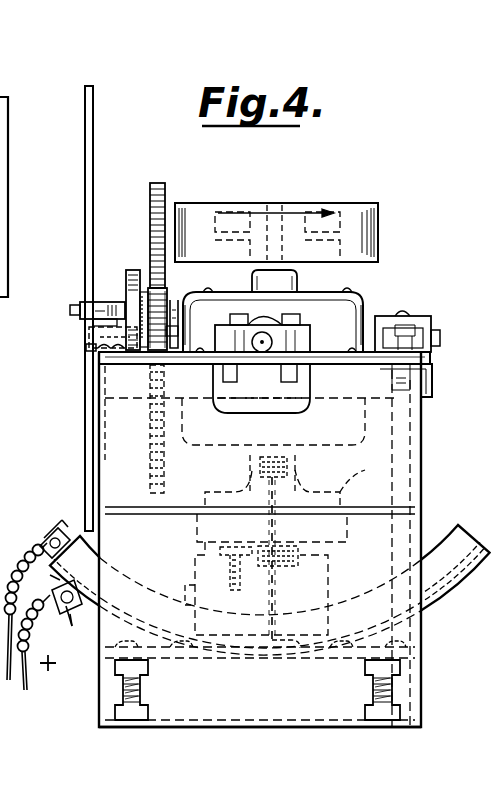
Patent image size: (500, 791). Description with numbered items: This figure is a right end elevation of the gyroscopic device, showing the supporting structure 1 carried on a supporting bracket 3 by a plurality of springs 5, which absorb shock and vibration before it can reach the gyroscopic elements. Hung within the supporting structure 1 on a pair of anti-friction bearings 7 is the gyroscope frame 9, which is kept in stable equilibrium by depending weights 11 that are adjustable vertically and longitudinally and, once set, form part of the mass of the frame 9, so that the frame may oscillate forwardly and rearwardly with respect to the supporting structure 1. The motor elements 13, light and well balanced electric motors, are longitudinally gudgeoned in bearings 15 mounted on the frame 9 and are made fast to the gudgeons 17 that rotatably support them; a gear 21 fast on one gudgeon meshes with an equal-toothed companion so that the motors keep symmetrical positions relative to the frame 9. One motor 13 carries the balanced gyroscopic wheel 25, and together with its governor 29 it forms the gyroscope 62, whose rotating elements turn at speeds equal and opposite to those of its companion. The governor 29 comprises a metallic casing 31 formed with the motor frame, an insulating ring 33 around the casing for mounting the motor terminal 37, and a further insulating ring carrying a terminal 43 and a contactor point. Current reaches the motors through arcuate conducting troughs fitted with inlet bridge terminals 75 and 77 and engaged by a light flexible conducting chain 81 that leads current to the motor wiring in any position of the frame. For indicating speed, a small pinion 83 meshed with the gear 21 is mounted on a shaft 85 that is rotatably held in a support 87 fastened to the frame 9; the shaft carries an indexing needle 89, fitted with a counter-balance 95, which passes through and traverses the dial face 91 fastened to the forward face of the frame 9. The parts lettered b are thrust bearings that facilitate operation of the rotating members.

The supporting structure 1 is at (378, 472).
The supporting bracket 3 is at (262, 728).
The springs 5 is at (118, 700).
The anti-friction bearings 7 is at (300, 344).
The gyroscope frame 9 is at (430, 390).
The depending weights 11 is at (195, 572).
The motor elements 13 is at (358, 312).
The bearings 15 is at (425, 324).
The gudgeons 17 is at (440, 340).
The gear 21 is at (152, 188).
The gyroscopic wheel 25 is at (362, 236).
The governor 29 is at (212, 503).
The metallic casing 31 is at (320, 505).
The insulating ring 33 is at (215, 455).
The motor terminal 37 is at (285, 460).
The terminal 43 is at (298, 552).
The gyroscope 62 is at (313, 197).
The inlet bridge terminal 75 is at (55, 528).
The inlet bridge terminal 77 is at (71, 612).
The conducting chain 81 is at (270, 625).
The pinion 83 is at (150, 286).
The shaft 85 is at (178, 310).
The support 87 is at (172, 332).
The indexing needle 89 is at (106, 311).
The dial face 91 is at (88, 88).
The counter-balance 95 is at (128, 292).
The thrust bearings b is at (268, 324).